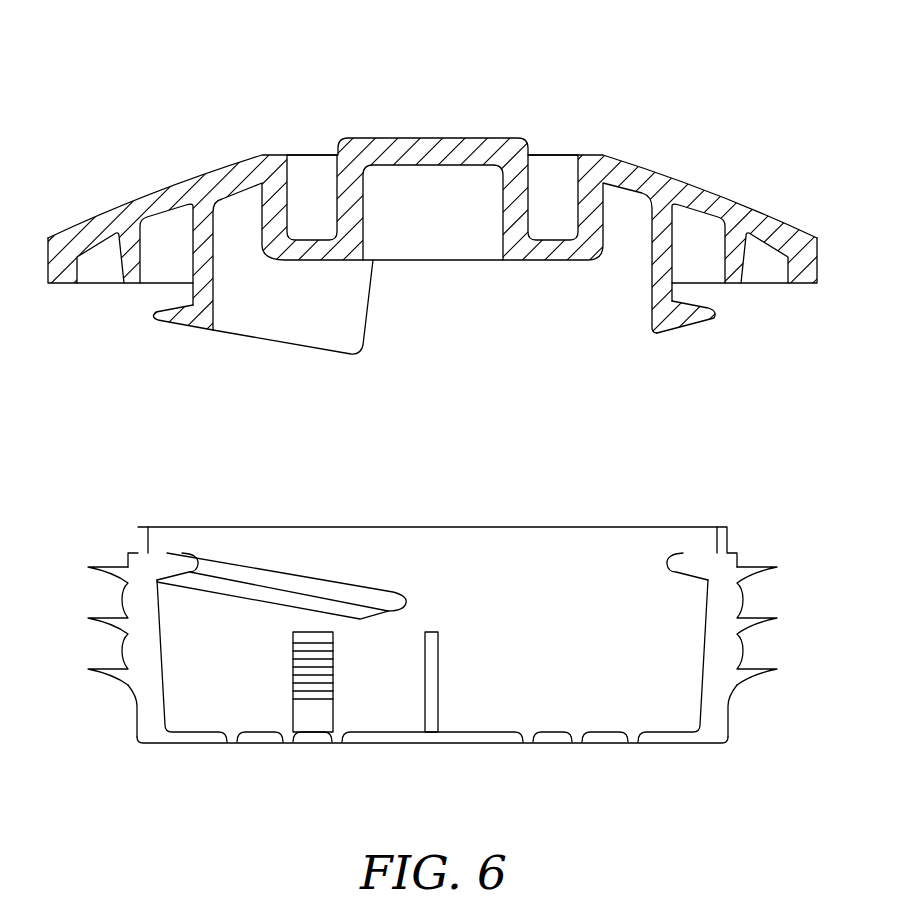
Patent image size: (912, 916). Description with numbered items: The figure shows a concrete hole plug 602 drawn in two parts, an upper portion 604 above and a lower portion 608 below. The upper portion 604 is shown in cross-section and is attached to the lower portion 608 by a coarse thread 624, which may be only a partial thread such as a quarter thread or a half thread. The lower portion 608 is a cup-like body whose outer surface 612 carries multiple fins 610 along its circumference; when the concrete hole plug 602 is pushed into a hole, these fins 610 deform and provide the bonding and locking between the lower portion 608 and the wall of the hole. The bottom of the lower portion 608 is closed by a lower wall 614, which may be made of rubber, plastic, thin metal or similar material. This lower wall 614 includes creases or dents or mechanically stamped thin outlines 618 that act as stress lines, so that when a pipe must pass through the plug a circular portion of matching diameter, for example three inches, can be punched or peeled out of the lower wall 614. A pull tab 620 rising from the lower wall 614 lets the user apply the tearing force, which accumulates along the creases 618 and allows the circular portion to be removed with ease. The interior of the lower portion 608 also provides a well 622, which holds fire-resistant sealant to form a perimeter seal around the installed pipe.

The concrete hole plug 602 is at (763, 50).
The upper portion 604 is at (609, 166).
The coarse thread 624 is at (156, 316).
The lower portion 608 is at (675, 739).
The fins 610 is at (105, 675).
The outer surface 612 is at (133, 594).
The lower wall 614 is at (188, 738).
The creases or dents or mechanically stamped thin outlines 618 is at (576, 731).
The pull tab 620 is at (438, 645).
The well 622 is at (248, 678).